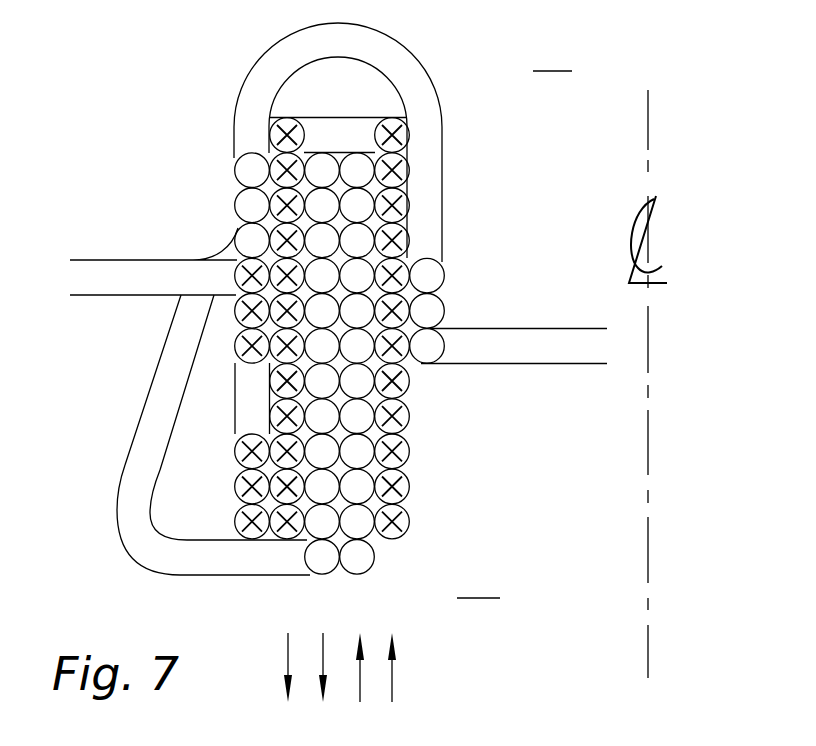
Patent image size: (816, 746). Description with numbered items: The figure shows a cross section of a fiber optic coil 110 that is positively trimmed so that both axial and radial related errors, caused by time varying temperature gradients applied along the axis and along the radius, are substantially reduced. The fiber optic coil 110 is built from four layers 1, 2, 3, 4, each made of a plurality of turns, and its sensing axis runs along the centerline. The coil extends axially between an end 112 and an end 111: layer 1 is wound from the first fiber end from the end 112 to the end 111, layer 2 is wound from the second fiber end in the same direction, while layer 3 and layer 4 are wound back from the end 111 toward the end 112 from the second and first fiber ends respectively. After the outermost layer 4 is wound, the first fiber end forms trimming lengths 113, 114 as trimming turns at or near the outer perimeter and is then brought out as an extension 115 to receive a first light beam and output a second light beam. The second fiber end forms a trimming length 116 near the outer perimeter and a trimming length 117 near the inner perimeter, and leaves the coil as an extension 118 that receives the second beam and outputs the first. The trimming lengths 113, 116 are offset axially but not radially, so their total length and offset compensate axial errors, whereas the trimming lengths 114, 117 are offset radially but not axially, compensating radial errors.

The fiber optic coil 110 is at (408, 32).
The end of the fiber optic coil 111 is at (552, 60).
The end of the fiber optic coil 112 is at (478, 587).
The trimming length 113 is at (235, 487).
The trimming length 114 is at (233, 313).
The extension 115 is at (112, 260).
The trimming length 116 is at (238, 222).
The trimming length 117 is at (447, 302).
The extension 118 is at (525, 364).
The layer 1 is at (392, 649).
The layer 2 is at (360, 649).
The layer 3 is at (323, 649).
The layer 4 is at (288, 649).